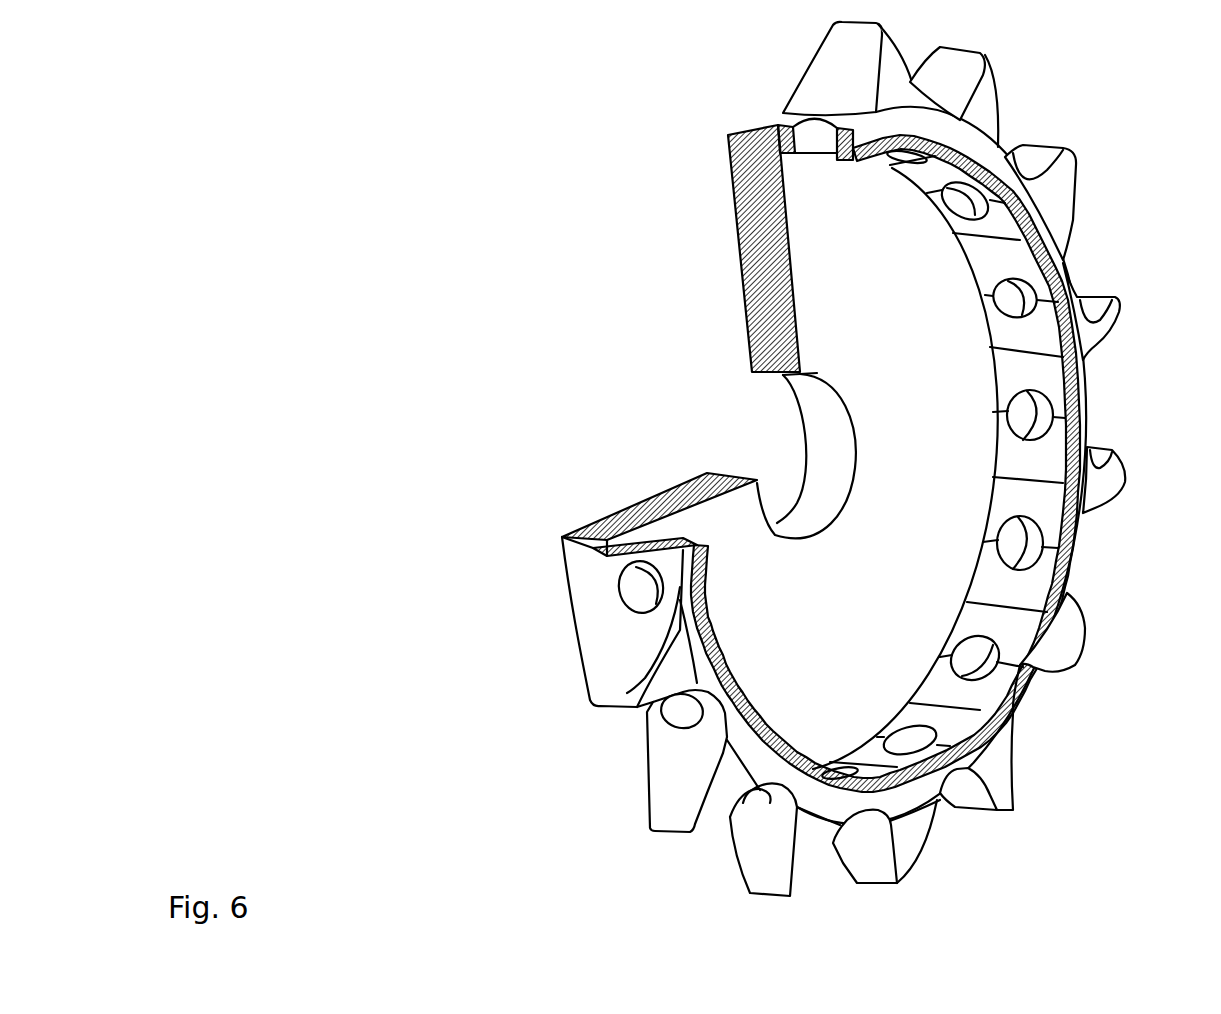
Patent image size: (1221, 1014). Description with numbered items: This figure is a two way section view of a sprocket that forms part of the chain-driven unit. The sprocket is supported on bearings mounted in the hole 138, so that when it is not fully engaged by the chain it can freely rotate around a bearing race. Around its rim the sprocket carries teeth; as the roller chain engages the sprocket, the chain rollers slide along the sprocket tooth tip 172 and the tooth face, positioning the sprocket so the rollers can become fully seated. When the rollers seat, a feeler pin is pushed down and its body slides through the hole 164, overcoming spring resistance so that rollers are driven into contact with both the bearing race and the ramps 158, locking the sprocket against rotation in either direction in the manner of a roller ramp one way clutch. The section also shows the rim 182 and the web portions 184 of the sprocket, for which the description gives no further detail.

The hole 138 is at (740, 250).
The ramps 158 is at (967, 692).
The hole 164 is at (638, 592).
The sprocket tooth tip 172 is at (607, 690).
The rim 182 is at (1052, 578).
The radial ribs 184 is at (1062, 547).